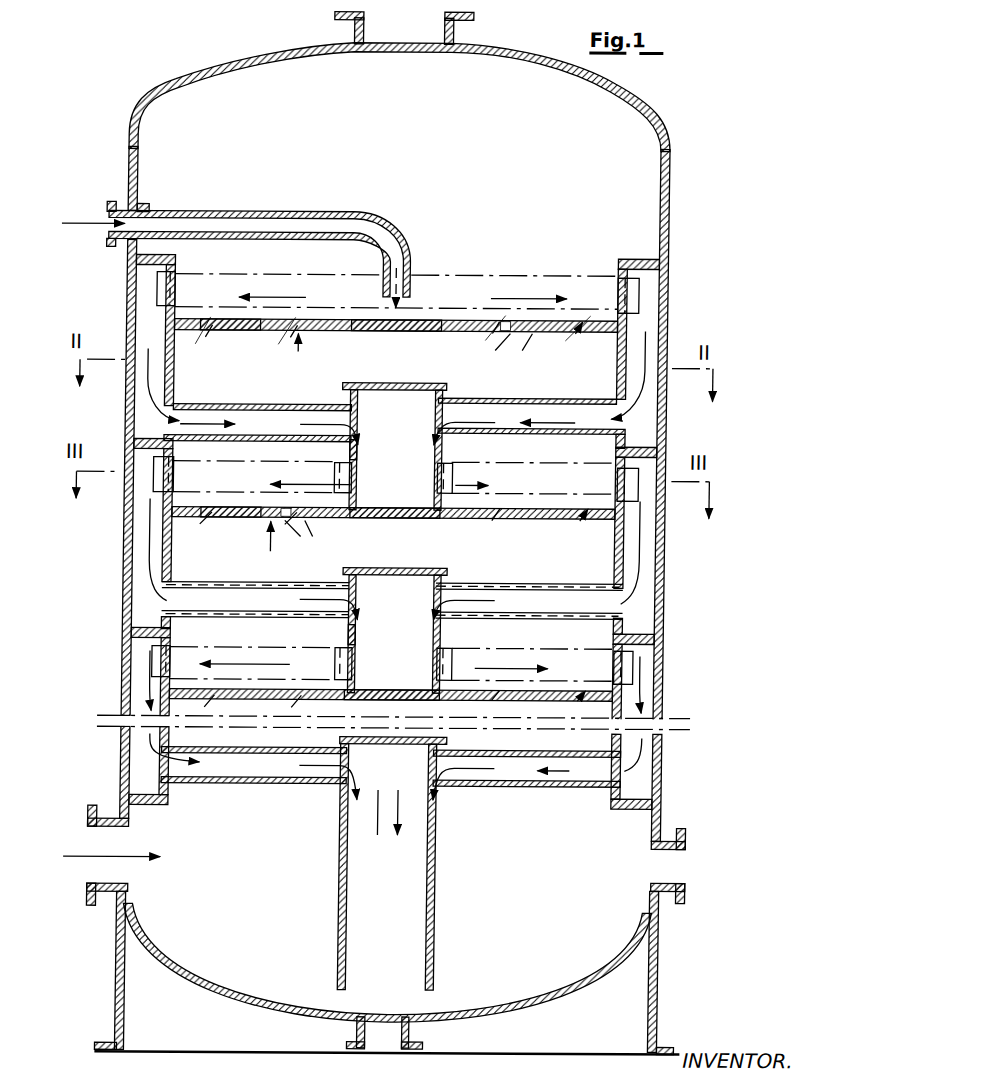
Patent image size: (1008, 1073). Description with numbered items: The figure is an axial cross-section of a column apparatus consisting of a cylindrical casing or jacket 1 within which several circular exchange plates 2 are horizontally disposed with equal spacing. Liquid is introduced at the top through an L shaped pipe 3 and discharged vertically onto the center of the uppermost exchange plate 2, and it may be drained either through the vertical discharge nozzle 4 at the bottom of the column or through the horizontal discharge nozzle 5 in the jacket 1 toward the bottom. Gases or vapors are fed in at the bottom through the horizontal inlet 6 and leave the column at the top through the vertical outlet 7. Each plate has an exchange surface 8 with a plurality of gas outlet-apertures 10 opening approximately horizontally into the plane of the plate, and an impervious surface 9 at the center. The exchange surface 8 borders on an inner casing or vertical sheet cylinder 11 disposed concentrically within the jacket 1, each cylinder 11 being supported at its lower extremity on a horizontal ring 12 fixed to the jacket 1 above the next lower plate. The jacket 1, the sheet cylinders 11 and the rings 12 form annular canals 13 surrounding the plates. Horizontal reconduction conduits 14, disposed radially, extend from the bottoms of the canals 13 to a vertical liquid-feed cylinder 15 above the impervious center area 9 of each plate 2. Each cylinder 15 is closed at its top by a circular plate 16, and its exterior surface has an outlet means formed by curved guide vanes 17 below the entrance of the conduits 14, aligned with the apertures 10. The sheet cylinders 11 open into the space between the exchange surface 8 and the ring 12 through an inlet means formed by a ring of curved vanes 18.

The cylindrical casing or jacket 1 is at (131, 416).
The exchange plate 2 is at (393, 510).
The L shaped pipe 3 is at (176, 213).
The vertical discharge nozzle 4 is at (422, 1030).
The horizontal discharge nozzle 5 is at (671, 885).
The horizontal inlet 6 is at (122, 895).
The vertical outlet 7 is at (456, 29).
The exchange surface 8 is at (241, 333).
The impervious surface 9 is at (371, 332).
The gas outlet-apertures 10 is at (406, 439).
The inner casing or vertical sheet cylinder 11 is at (179, 358).
The horizontal ring 12 is at (641, 257).
The annular canal 13 is at (650, 321).
The horizontal reconduction conduit 14 is at (289, 406).
The vertical liquid-feed cylinder 15 is at (353, 447).
The circular plate 16 is at (421, 383).
The curved guide vanes 17 is at (457, 471).
The ring of curved vanes 18 is at (162, 290).